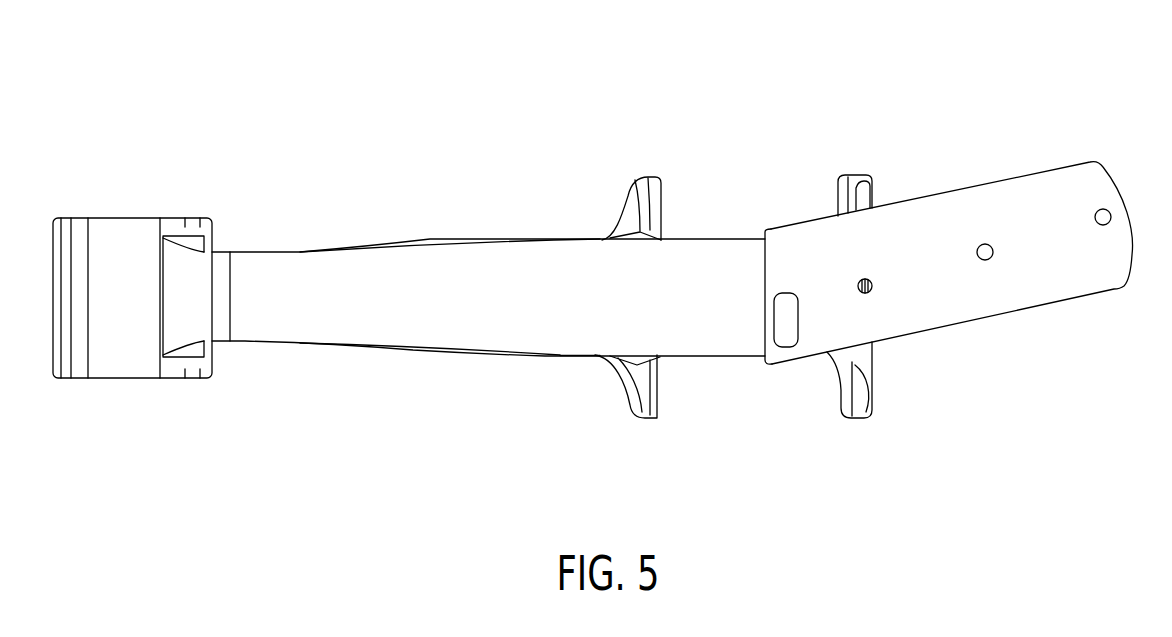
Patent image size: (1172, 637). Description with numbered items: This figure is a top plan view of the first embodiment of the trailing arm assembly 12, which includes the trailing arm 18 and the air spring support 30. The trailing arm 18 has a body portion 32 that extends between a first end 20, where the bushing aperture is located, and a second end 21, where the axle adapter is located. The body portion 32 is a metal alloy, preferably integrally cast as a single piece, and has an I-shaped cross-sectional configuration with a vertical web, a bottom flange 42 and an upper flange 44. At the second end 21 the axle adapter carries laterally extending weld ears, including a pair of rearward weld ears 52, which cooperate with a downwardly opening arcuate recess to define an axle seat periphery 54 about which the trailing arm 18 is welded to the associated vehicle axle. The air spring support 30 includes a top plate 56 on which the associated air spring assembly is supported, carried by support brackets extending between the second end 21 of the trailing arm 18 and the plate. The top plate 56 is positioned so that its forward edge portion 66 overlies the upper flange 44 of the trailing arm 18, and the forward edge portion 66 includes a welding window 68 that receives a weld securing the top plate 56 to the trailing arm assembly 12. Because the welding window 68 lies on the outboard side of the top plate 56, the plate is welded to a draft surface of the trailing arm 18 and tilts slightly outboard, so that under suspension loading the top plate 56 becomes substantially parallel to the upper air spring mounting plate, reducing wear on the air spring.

The trailing arm assembly 12 is at (531, 153).
The trailing arm 18 is at (478, 358).
The first end 20 is at (238, 343).
The second end 21 is at (598, 355).
The air spring support 30 is at (977, 320).
The body portion 32 is at (422, 247).
The bottom flange 42 is at (413, 347).
The upper flange 44 is at (293, 273).
The rearward weld ears 52 is at (853, 418).
The axle seat periphery 54 is at (648, 418).
The top plate 56 is at (1037, 195).
The forward edge portion 66 is at (778, 252).
The welding window 68 is at (790, 293).